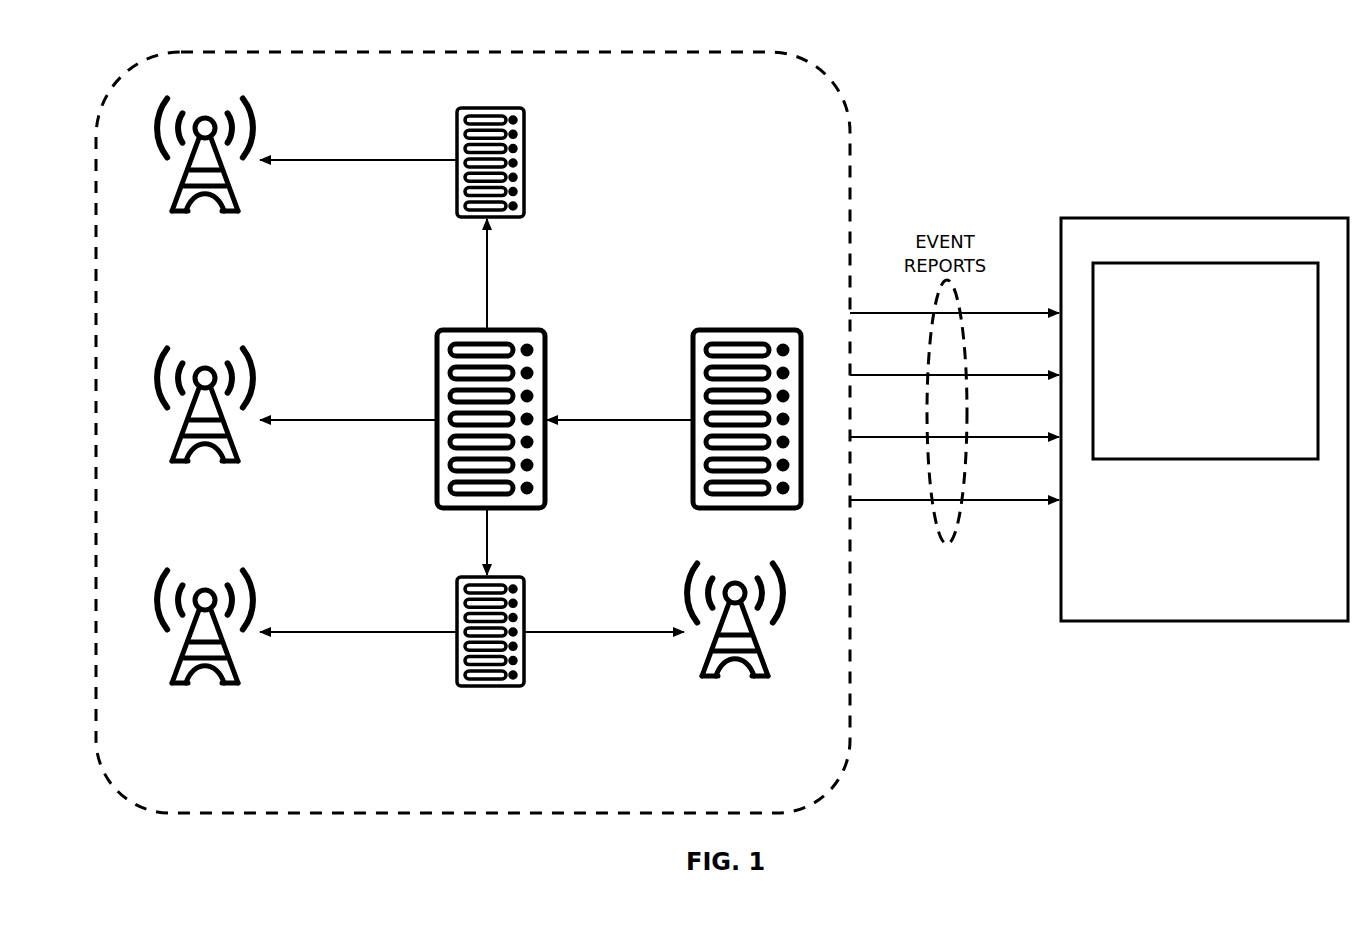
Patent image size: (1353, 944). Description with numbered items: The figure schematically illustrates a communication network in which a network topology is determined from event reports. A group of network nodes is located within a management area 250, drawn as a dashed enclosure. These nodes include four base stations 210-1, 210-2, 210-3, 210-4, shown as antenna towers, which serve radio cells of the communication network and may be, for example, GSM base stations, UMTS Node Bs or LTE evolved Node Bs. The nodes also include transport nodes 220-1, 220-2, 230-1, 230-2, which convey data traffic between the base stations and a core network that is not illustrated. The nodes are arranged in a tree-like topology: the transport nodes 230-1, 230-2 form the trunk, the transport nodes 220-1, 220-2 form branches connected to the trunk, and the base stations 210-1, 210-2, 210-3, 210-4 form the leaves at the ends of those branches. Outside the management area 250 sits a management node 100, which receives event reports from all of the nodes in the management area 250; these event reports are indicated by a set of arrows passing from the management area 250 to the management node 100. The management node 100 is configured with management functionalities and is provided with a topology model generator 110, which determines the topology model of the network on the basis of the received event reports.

The management node 100 is at (1119, 621).
The topology model generator 110 is at (1210, 459).
The base station 210-1 is at (180, 213).
The base station 210-2 is at (180, 463).
The base station 210-3 is at (180, 685).
The base station 210-4 is at (706, 679).
The transport node 220-1 is at (524, 143).
The transport node 220-2 is at (486, 688).
The transport node 230-1 is at (437, 345).
The transport node 230-2 is at (762, 330).
The management area 250 is at (850, 125).